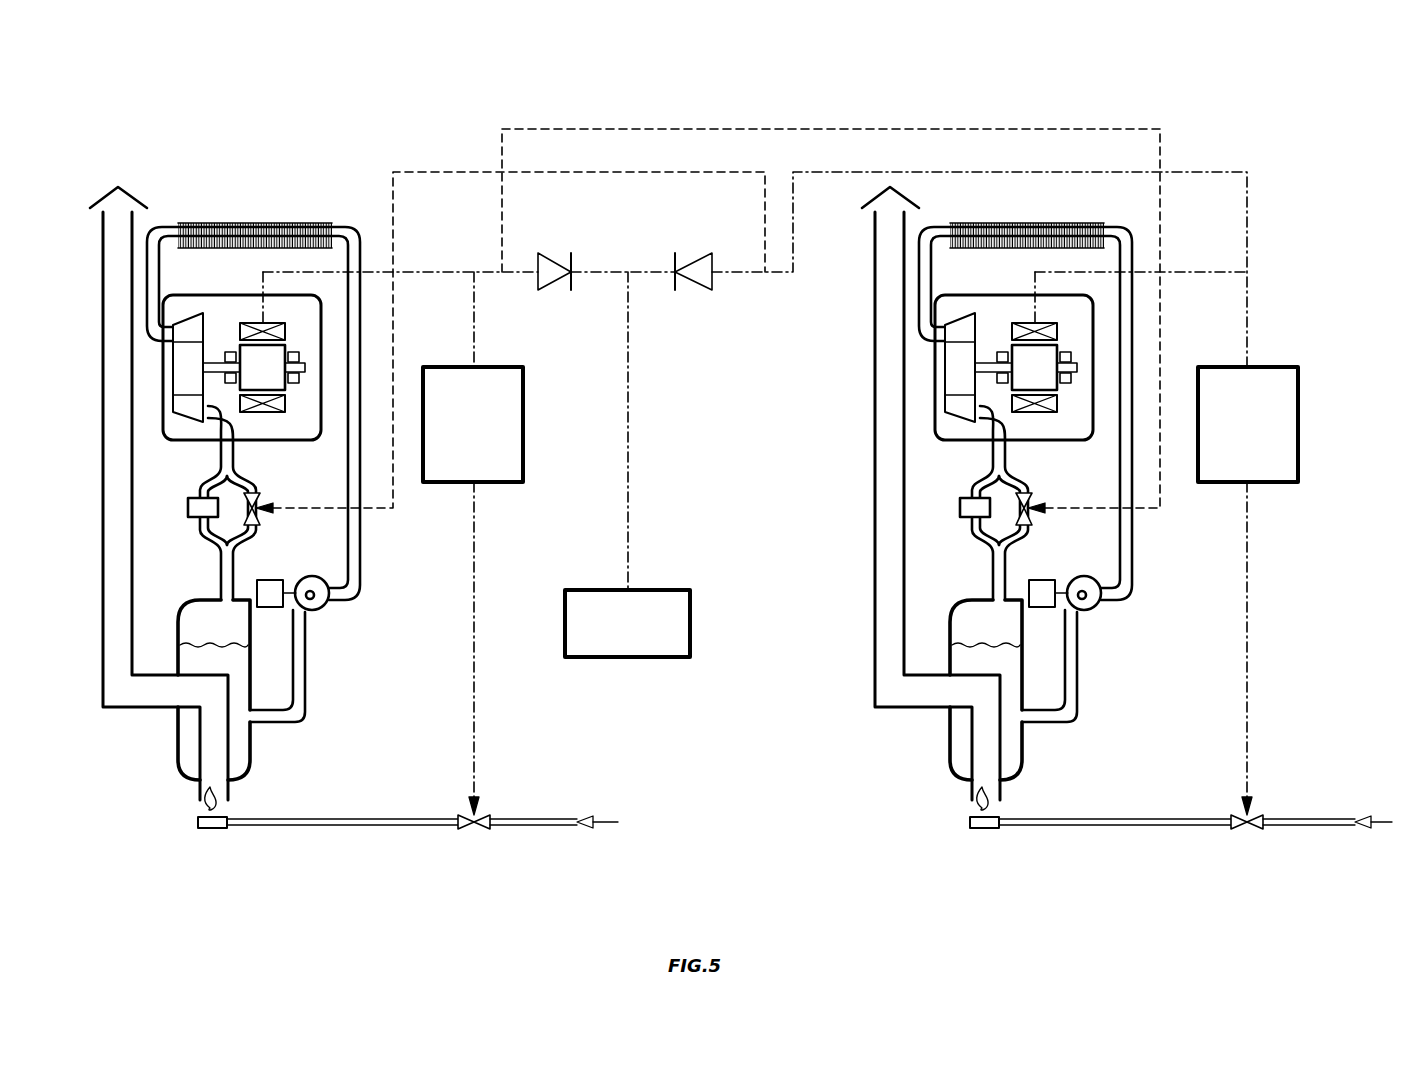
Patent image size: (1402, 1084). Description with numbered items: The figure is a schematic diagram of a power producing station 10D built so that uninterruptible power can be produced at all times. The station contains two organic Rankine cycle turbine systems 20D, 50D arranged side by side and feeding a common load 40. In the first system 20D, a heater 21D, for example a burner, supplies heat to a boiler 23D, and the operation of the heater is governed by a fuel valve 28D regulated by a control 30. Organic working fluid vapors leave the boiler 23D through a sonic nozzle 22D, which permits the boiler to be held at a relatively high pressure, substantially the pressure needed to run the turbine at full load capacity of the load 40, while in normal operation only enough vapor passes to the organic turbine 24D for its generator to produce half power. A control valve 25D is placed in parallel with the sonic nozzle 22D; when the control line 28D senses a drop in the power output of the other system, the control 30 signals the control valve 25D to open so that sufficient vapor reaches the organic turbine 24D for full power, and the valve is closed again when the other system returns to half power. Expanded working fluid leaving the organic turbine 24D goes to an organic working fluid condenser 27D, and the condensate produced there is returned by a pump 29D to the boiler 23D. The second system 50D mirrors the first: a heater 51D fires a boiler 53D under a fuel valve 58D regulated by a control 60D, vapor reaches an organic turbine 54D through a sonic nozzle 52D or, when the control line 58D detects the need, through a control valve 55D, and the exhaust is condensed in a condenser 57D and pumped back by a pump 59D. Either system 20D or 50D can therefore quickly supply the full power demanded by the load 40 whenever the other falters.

The power producing station 10D is at (136, 157).
The organic Rankine cycle turbine system 20D is at (240, 183).
The heater 21D is at (190, 822).
The sonic nozzle 22D is at (196, 510).
The boiler 23D is at (178, 658).
The organic turbine 24D is at (185, 318).
The control valve 25D is at (258, 498).
The organic working fluid condenser 27D is at (298, 228).
The fuel valve / control line 28D is at (437, 172).
The pump 29D is at (313, 610).
The control 30 is at (470, 368).
The load 40 is at (613, 590).
The organic Rankine cycle turbine system 50D is at (948, 449).
The heater 51D is at (1076, 826).
The sonic nozzle 52D is at (961, 522).
The boiler 53D is at (967, 690).
The organic turbine 54D is at (1014, 355).
The control valve 55D is at (1050, 496).
The organic working fluid condenser 57D is at (1025, 400).
The fuel valve / control line 58D is at (947, 486).
The pump 59D is at (1082, 639).
The control 60D is at (1247, 580).